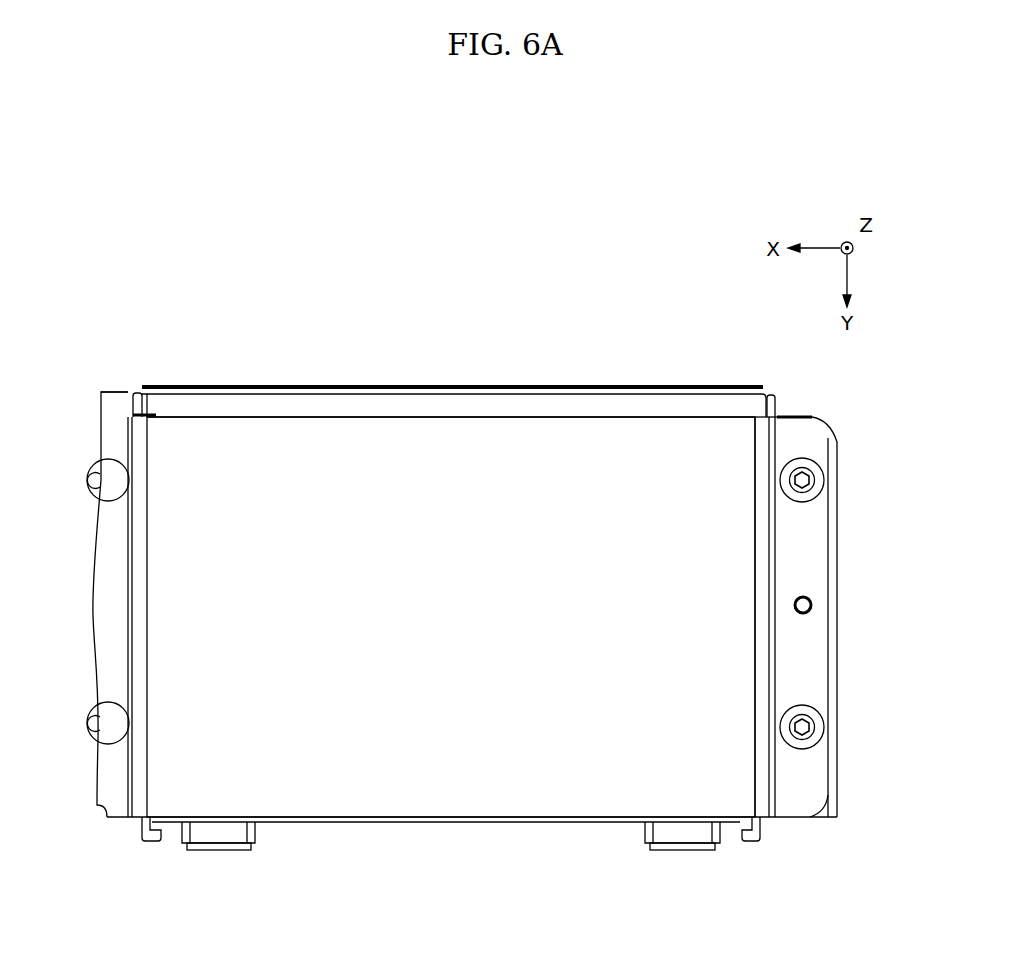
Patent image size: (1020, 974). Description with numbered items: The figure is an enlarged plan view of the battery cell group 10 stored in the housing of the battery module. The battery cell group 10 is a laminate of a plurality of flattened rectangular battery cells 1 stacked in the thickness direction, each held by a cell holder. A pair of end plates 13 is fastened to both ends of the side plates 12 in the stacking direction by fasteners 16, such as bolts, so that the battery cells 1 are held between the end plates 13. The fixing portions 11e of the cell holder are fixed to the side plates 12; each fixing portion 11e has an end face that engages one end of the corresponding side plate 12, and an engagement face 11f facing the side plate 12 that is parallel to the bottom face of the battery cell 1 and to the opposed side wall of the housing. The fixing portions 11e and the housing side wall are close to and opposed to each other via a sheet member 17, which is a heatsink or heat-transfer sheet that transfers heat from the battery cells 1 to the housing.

The battery cell 1 is at (214, 864).
The battery cell group 10 is at (221, 303).
The fixing portion 11e is at (118, 391).
The engagement face 11f is at (760, 420).
The side plate 12 is at (158, 384).
The end plate 13 is at (812, 549).
The fastener 16 is at (822, 473).
The sheet member 17 is at (628, 384).